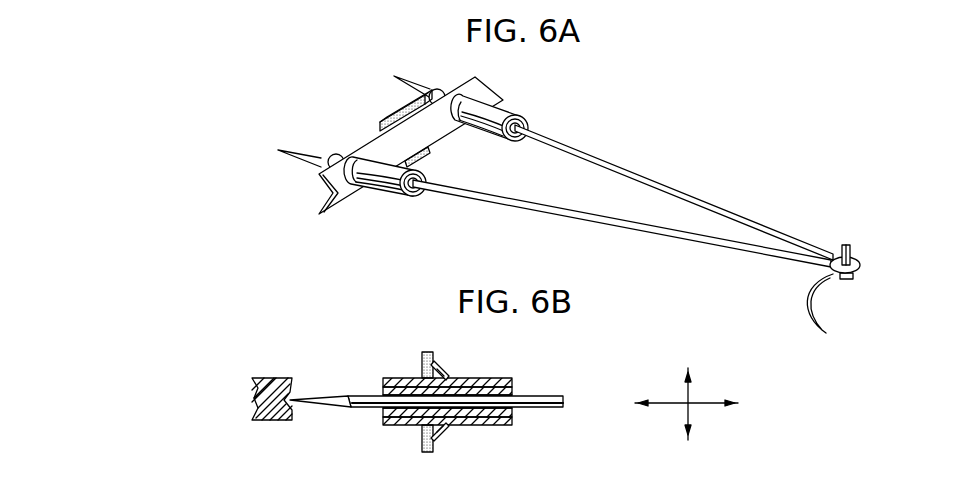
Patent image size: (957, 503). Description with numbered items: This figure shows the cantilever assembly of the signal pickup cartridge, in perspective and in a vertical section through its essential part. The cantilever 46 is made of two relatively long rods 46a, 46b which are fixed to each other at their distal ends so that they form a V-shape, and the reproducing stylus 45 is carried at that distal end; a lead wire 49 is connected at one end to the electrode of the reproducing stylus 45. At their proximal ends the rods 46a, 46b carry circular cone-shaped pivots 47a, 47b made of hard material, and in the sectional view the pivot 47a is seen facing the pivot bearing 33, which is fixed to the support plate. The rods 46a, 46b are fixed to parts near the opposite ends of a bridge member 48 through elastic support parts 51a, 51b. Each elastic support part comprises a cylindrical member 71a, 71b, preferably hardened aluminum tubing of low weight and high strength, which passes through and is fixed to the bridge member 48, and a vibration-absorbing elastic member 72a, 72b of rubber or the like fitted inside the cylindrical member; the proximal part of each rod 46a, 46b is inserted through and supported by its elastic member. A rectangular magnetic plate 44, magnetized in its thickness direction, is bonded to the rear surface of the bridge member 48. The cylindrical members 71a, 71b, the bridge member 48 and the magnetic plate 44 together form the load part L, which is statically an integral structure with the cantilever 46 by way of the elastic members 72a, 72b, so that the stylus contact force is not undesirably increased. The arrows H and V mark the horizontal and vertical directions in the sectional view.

In FIG. 6B, the pivot bearing 33 is at (267, 422).
In FIG. 6A, the magnetic plate 44 is at (392, 109).
In FIG. 6B, the magnetic plate 44 is at (427, 452).
In FIG. 6A, the reproducing stylus 45 is at (845, 245).
In FIG. 6A, the cantilever 46 is at (623, 208).
In FIG. 6A, the rod 46a is at (700, 249).
In FIG. 6B, the rod 46a is at (544, 395).
In FIG. 6A, the rod 46b is at (685, 190).
In FIG. 6A, the pivot 47a is at (293, 157).
In FIG. 6B, the pivot 47a is at (307, 395).
In FIG. 6A, the pivot 47b is at (413, 78).
In FIG. 6A, the bridge member 48 is at (358, 146).
In FIG. 6B, the bridge member 48 is at (443, 435).
In FIG. 6A, the lead wire 49 is at (813, 309).
In FIG. 6A, the elastic support part 51a is at (399, 208).
In FIG. 6B, the elastic support part 51a is at (456, 395).
In FIG. 6A, the elastic support part 51b is at (513, 120).
In FIG. 6A, the cylindrical member 71a is at (389, 198).
In FIG. 6B, the cylindrical member 71a is at (397, 425).
In FIG. 6A, the cylindrical member 71b is at (493, 106).
In FIG. 6A, the elastic member 72a is at (417, 194).
In FIG. 6B, the elastic member 72a is at (517, 419).
In FIG. 6A, the elastic member 72b is at (513, 139).
In FIG. 6B, the load part L is at (450, 373).
In FIG. 6B, the horizontal direction H is at (713, 402).
In FIG. 6B, the vertical direction V is at (688, 415).